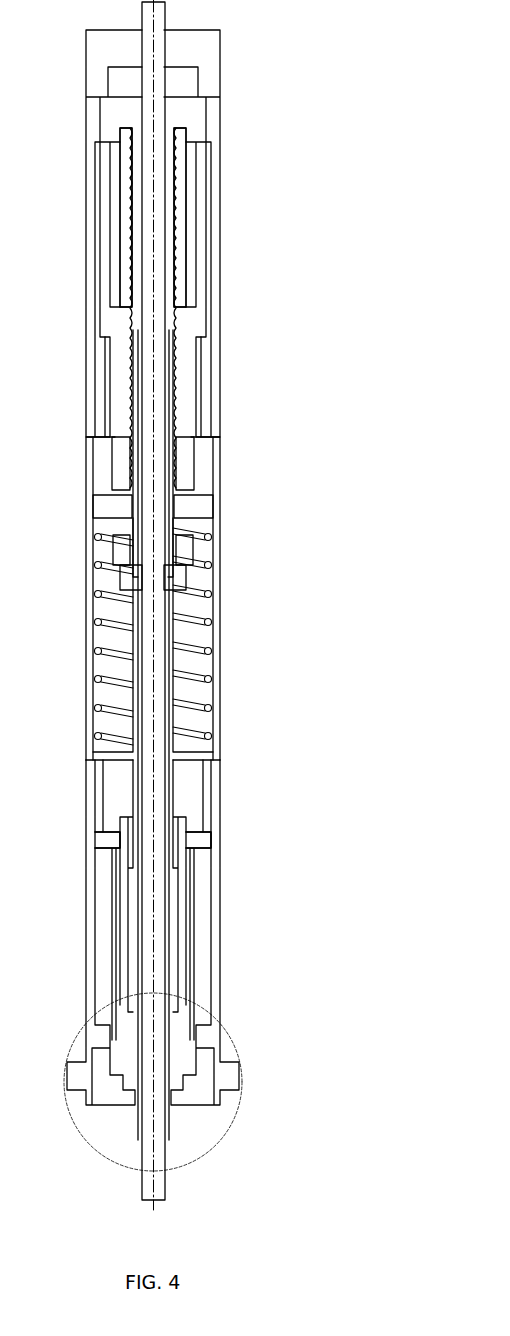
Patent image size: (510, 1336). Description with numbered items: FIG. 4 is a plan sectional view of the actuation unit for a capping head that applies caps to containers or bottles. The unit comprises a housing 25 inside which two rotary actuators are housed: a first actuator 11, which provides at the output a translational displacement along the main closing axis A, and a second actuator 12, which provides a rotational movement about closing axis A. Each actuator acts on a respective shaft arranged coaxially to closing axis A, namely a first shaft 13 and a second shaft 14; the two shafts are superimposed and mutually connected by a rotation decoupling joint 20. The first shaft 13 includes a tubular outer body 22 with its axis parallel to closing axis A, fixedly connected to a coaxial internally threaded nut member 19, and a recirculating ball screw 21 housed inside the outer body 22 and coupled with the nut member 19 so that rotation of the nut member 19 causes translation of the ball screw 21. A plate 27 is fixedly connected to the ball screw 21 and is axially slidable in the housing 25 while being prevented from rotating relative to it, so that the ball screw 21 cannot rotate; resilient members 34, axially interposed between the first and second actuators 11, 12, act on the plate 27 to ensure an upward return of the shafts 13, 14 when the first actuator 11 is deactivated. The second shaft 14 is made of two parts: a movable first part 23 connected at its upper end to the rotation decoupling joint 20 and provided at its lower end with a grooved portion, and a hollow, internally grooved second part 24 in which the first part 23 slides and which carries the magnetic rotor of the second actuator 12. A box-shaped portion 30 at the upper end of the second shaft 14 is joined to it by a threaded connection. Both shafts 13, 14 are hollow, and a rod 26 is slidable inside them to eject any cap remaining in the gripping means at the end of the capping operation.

The rod 26 is at (158, 48).
The main closing axis A is at (155, 135).
The first actuator 11 is at (206, 228).
The first shaft 13 is at (322, 283).
The recirculating ball screw 21 is at (180, 298).
The tubular outer body 22 is at (195, 352).
The nut member 19 is at (190, 394).
The housing 25 is at (88, 470).
The plate 27 is at (200, 500).
The rotation decoupling joint 20 is at (183, 550).
The box-shaped portion 30 is at (195, 565).
The resilient members 34 is at (208, 612).
The second actuator 12 is at (205, 912).
The second shaft 14 is at (321, 771).
The first part 23 is at (200, 782).
The second part 24 is at (200, 838).